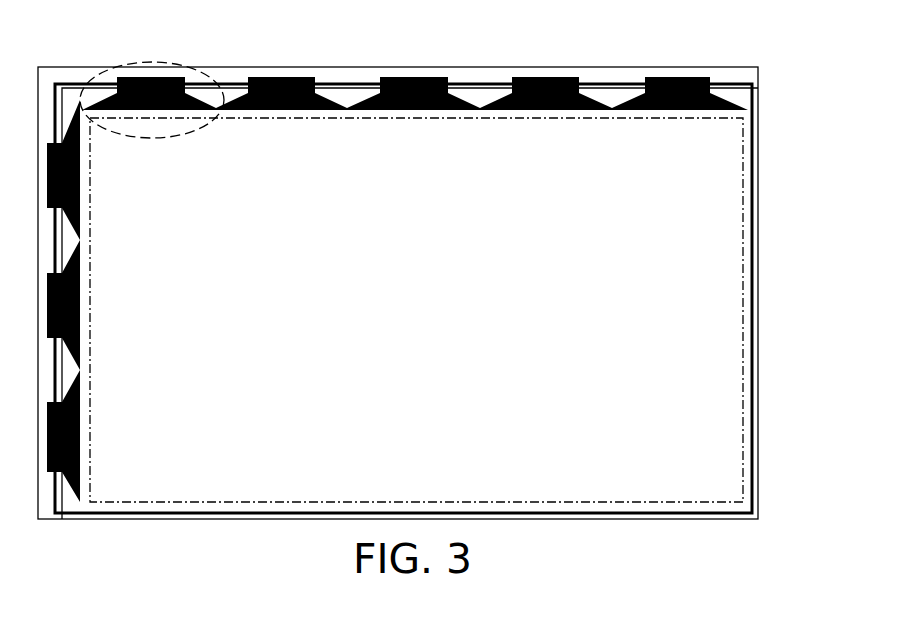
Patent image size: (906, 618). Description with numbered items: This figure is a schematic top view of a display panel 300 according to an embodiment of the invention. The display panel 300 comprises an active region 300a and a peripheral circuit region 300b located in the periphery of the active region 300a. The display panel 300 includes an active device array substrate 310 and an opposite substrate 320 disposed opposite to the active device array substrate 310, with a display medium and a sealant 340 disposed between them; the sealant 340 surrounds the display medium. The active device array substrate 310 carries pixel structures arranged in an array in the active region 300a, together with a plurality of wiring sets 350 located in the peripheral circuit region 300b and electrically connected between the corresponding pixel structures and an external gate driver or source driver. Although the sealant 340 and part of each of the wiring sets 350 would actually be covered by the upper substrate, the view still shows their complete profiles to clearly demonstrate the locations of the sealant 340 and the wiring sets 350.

The display panel 300 is at (784, 567).
The active region 300a is at (674, 280).
The peripheral circuit region 300b is at (744, 100).
The active device array substrate 310 is at (690, 67).
The opposite substrate 320 is at (740, 84).
The sealant 340 is at (607, 88).
The wiring sets 350 is at (668, 78).